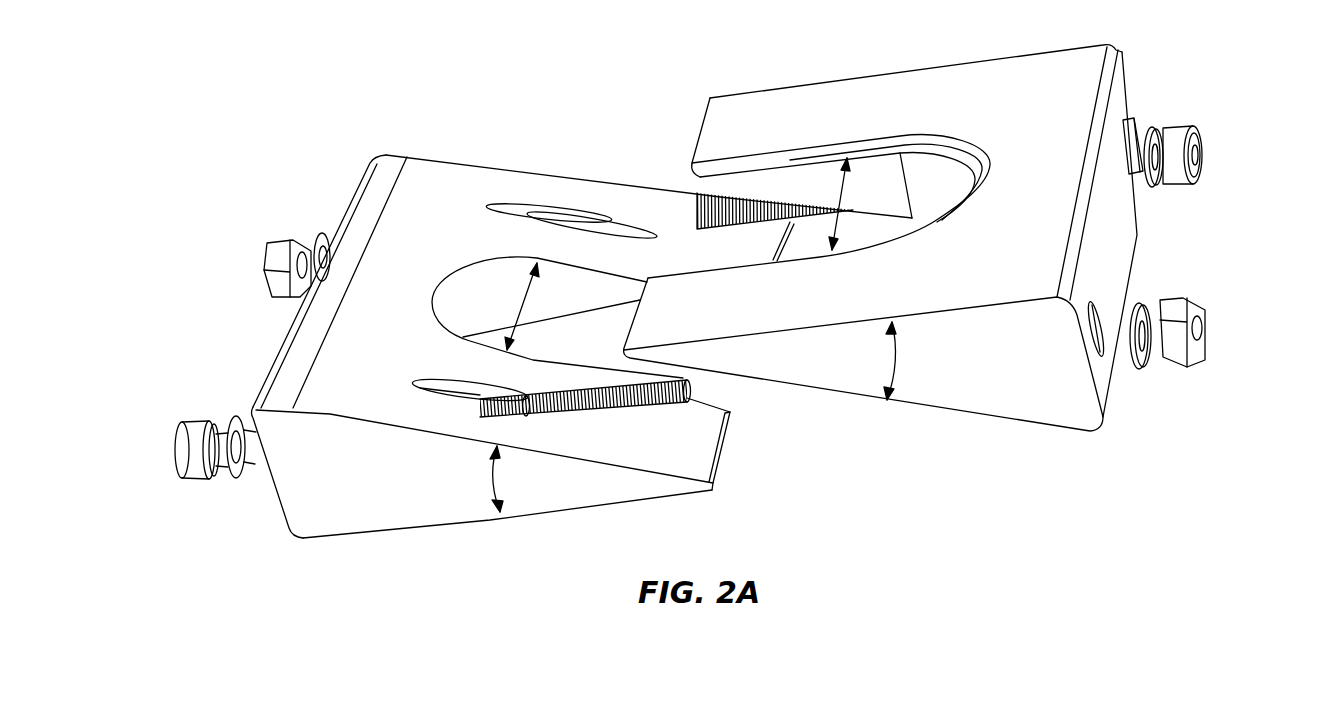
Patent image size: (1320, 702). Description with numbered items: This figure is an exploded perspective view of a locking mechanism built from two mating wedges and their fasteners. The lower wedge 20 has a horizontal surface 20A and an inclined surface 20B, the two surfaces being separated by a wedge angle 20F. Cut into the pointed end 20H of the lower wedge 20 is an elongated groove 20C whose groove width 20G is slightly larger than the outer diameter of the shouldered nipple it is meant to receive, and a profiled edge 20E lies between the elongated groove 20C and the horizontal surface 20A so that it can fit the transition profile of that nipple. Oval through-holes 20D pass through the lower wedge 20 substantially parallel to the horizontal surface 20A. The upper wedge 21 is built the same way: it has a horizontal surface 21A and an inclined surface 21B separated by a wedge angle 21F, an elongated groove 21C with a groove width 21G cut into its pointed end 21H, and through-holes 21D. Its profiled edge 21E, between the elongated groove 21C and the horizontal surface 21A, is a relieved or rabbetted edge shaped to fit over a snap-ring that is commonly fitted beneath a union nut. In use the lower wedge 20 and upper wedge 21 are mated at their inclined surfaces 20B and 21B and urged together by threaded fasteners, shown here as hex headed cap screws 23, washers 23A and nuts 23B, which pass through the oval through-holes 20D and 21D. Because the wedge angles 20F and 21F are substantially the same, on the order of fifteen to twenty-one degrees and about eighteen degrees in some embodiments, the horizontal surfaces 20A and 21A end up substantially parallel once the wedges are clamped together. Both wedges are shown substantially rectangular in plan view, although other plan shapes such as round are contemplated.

The lower wedge 20 is at (283, 507).
The horizontal surface 20A is at (633, 505).
The inclined surface 20B is at (421, 170).
The elongated groove 20C is at (468, 275).
The oval through-holes 20D is at (490, 192).
The profiled edge 20E is at (600, 297).
The wedge angle 20F is at (490, 478).
The groove width 20G is at (530, 322).
The pointed end 20H is at (730, 448).
The upper wedge 21 is at (1110, 385).
The horizontal surface 21A is at (812, 92).
The inclined surface 21B is at (985, 430).
The elongated groove 21C is at (873, 177).
The through-holes 21D is at (1130, 120).
The profiled edge 21E is at (958, 140).
The wedge angle 21F is at (905, 360).
The groove width 21G is at (832, 228).
The pointed end 21H is at (700, 125).
The hex headed cap screws 23 is at (182, 452).
The washers 23A is at (235, 415).
The nuts 23B is at (268, 263).